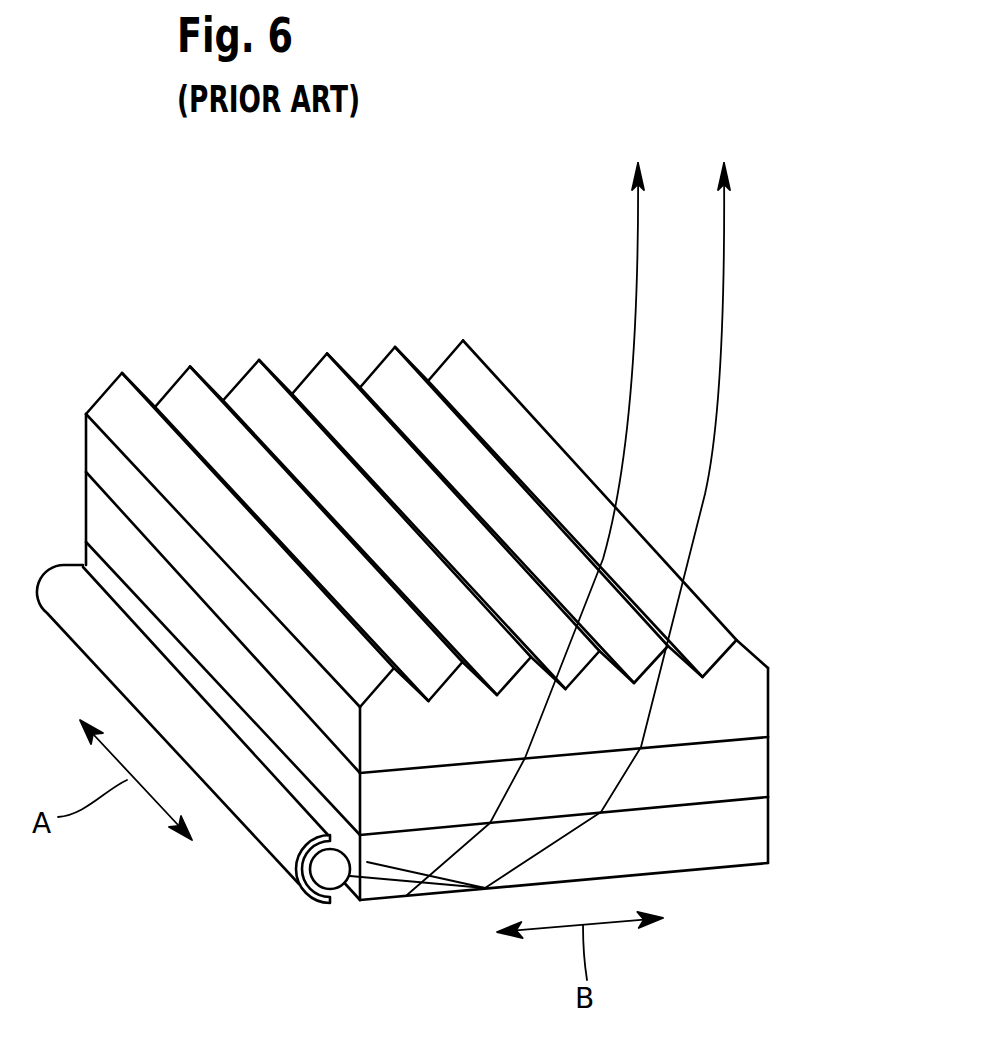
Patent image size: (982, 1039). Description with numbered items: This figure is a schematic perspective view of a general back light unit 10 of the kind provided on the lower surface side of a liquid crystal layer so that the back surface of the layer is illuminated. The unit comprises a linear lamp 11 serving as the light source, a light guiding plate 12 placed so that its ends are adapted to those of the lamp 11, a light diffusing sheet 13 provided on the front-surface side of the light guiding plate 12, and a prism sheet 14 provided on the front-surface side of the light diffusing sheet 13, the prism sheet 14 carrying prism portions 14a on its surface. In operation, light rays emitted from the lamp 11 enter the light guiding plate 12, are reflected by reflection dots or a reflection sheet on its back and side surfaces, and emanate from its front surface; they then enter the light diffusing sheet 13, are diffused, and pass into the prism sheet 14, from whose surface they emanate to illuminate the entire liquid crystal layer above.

The back light unit 10 is at (453, 565).
The linear lamp 11 is at (285, 848).
The light guiding plate 12 is at (758, 836).
The light diffusing sheet 13 is at (758, 773).
The prism sheet 14 is at (478, 543).
The prism portions 14a is at (483, 375).